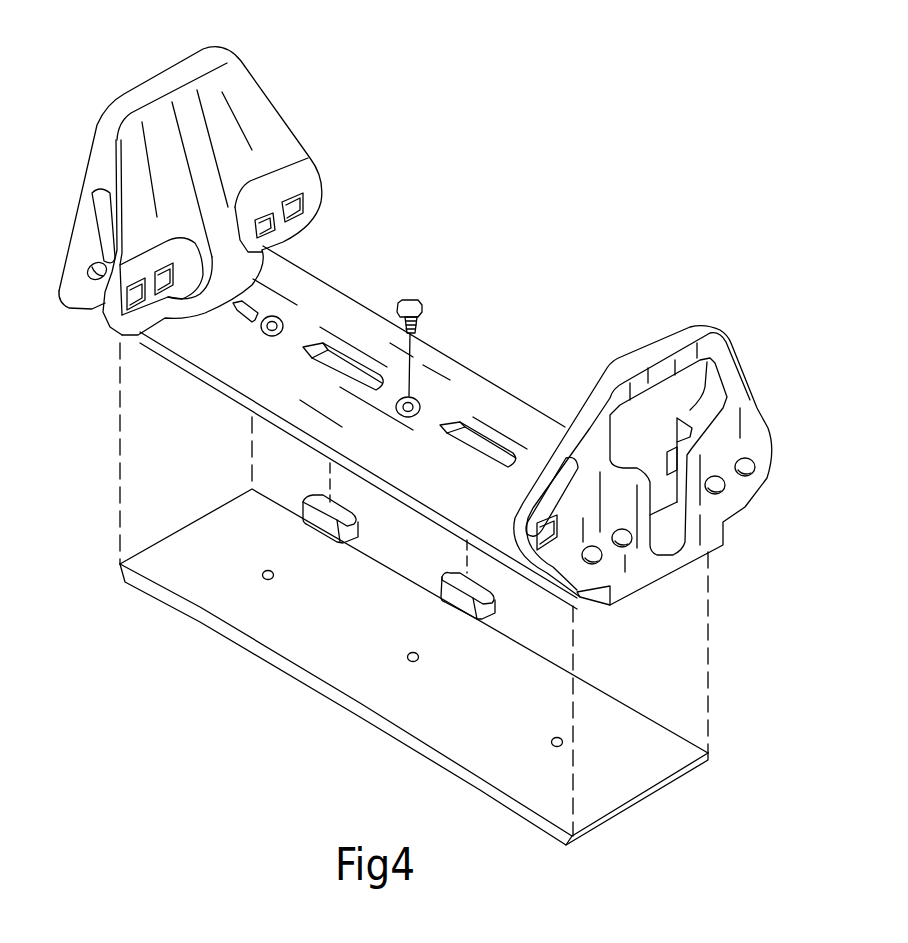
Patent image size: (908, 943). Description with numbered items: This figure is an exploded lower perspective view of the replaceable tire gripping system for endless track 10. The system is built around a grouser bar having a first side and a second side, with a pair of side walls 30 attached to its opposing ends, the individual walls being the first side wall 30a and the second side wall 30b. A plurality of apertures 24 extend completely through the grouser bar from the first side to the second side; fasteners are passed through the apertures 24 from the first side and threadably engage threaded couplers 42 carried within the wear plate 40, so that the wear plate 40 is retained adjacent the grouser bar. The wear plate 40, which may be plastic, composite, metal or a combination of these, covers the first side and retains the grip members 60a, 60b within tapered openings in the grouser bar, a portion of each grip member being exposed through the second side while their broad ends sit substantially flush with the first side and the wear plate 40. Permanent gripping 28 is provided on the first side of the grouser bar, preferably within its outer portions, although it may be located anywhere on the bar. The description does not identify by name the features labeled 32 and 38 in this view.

The replaceable tire gripping system for endless track 10 is at (627, 193).
The apertures 24 is at (420, 400).
The permanent gripping 28 is at (268, 297).
The side walls 30 is at (505, 410).
The side wall 30a is at (218, 113).
The side wall 30b is at (753, 430).
The slots 32 is at (320, 352).
The side wall 38 is at (177, 372).
The wear plate 40 is at (630, 763).
The threaded couplers 42 is at (263, 580).
The grip member 60a is at (320, 527).
The grip member 60b is at (462, 607).